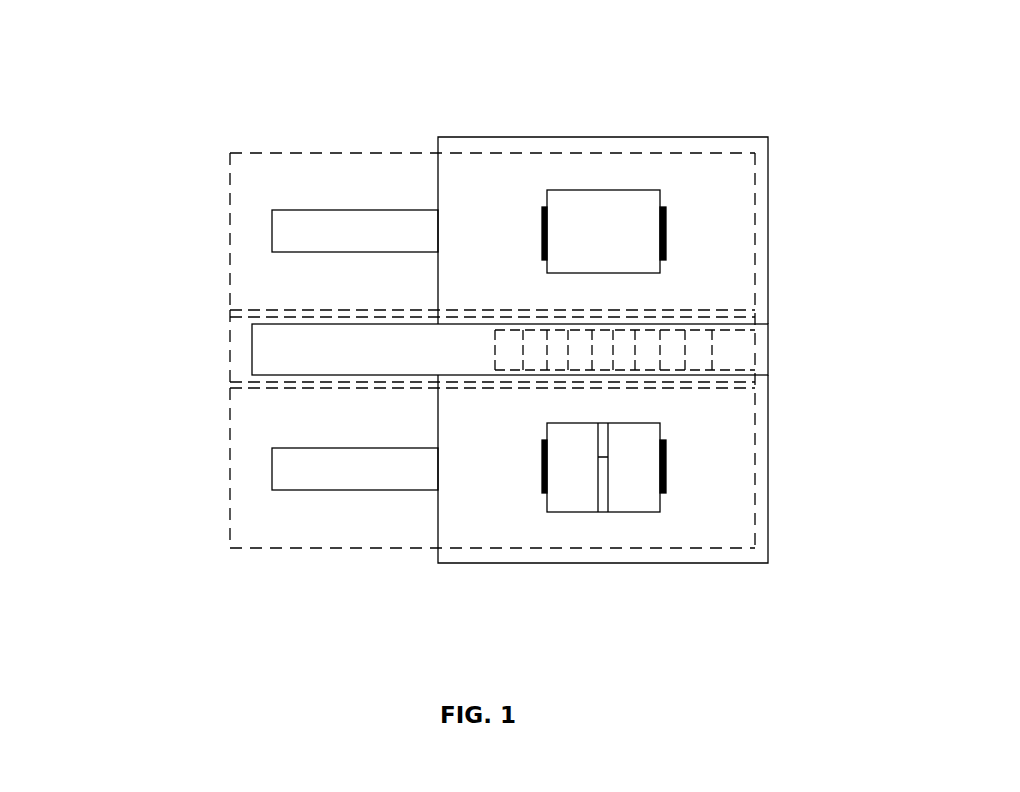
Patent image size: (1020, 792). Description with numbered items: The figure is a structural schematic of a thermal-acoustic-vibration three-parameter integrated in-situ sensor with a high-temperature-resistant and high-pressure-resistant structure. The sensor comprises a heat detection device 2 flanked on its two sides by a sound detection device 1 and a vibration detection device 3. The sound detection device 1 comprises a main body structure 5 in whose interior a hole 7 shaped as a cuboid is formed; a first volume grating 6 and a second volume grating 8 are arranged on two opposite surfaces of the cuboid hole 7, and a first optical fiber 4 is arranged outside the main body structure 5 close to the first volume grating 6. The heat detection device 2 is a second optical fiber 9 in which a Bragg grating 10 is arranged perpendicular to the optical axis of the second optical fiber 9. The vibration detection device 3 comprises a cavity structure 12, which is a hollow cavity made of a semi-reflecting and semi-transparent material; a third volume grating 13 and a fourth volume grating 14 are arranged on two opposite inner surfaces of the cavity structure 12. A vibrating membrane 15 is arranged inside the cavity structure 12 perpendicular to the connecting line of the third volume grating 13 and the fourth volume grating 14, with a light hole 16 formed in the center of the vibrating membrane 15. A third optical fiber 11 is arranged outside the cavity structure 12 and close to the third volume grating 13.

The sound detection device 1 is at (230, 233).
The heat detection device 2 is at (230, 350).
The vibration detection device 3 is at (230, 463).
The first optical fiber 4 is at (355, 232).
The main body structure 5 is at (493, 232).
The first volume grating 6 is at (543, 210).
The hole 7 is at (603, 230).
The second volume grating 8 is at (672, 217).
The second optical fiber 9 is at (715, 347).
The Bragg grating 10 is at (648, 343).
The third optical fiber 11 is at (355, 467).
The cavity structure 12 is at (493, 467).
The third volume grating 13 is at (542, 492).
The fourth volume grating 14 is at (668, 475).
The vibrating membrane 15 is at (610, 445).
The light hole 16 is at (603, 457).